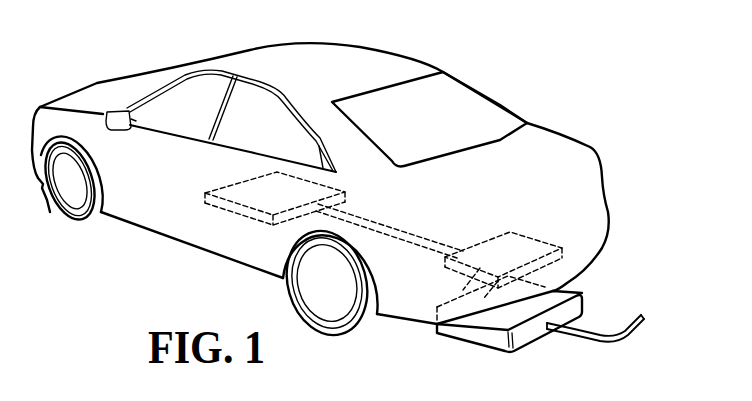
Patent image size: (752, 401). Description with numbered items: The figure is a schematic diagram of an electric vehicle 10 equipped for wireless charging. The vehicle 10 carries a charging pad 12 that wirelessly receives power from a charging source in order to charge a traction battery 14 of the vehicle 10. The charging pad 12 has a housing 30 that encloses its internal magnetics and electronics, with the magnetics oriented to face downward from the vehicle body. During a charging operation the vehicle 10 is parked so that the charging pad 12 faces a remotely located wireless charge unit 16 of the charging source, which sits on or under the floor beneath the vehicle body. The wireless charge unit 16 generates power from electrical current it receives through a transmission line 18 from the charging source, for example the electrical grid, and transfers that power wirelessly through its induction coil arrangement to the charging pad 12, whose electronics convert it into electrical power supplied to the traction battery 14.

The electric vehicle 10 is at (97, 83).
The charging pad 12 is at (540, 224).
The traction battery 14 is at (229, 184).
The wireless charge unit 16 is at (571, 298).
The transmission line 18 is at (632, 330).
The housing 30 is at (557, 243).